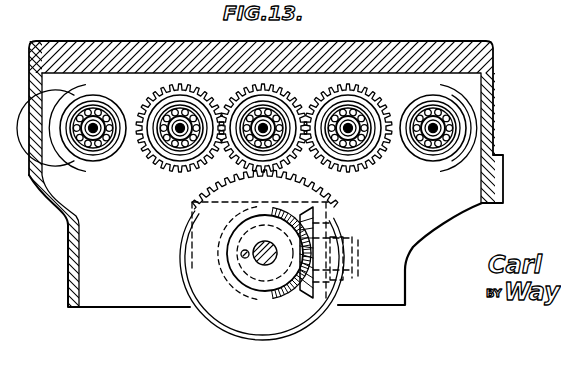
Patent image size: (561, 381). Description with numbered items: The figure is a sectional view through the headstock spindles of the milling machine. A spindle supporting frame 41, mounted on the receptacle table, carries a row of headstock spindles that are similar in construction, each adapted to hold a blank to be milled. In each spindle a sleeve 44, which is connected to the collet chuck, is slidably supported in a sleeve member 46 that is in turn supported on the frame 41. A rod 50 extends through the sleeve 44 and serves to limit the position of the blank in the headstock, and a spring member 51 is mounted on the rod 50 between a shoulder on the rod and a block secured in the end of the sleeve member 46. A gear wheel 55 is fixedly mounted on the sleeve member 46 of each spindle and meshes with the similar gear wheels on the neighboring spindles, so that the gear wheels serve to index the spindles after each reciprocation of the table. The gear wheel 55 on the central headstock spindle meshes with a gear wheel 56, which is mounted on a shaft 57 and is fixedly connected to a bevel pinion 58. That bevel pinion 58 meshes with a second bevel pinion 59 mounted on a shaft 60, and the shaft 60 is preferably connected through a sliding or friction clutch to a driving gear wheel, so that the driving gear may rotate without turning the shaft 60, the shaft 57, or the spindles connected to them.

The spindle supporting frame 41 is at (369, 47).
The sleeve 44 is at (447, 126).
The sleeve member 46 is at (435, 145).
The rod 50 is at (453, 132).
The spring member 51 is at (450, 142).
The gear wheel 55 is at (157, 157).
The gear wheel 56 is at (298, 193).
The shaft 57 is at (242, 254).
The bevel pinion 58 is at (288, 291).
The bevel pinion 59 is at (300, 292).
The shaft 60 is at (355, 262).